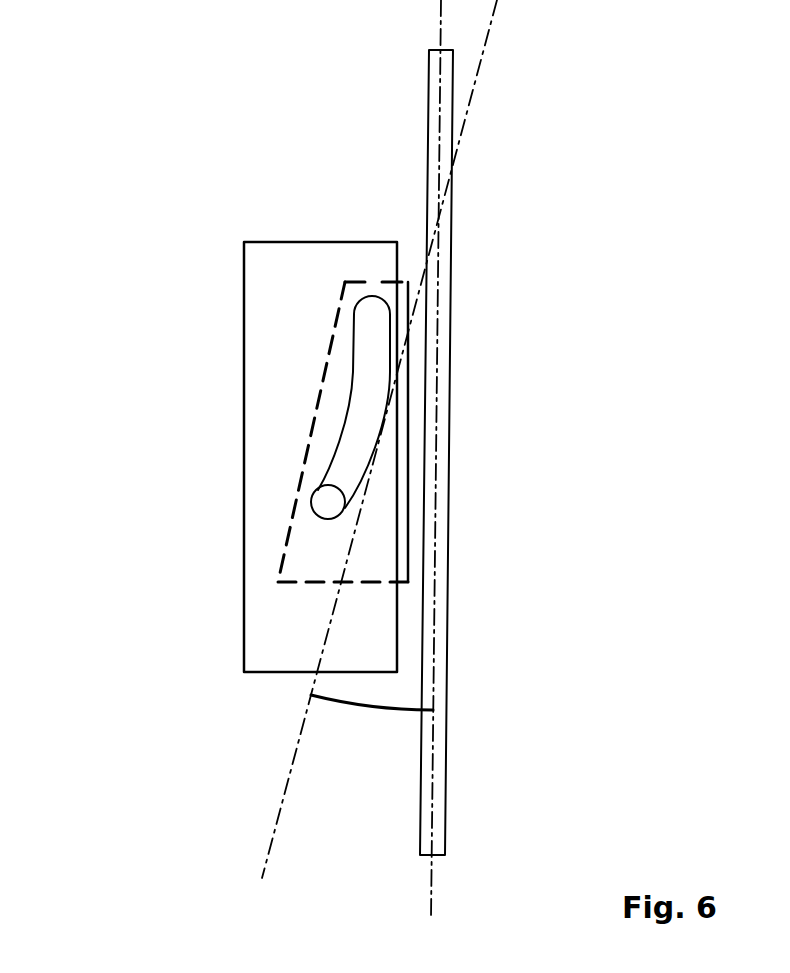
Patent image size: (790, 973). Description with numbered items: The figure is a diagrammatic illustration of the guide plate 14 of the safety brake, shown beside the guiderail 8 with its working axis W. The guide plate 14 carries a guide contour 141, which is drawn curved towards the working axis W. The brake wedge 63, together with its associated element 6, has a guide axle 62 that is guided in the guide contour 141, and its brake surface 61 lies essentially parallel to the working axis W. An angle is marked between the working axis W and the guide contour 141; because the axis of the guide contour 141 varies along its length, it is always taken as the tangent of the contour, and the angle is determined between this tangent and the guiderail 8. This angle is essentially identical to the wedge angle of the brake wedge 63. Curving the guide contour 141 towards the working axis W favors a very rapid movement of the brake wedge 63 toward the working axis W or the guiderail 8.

The guiderail 8 is at (517, 459).
The guide plate 14 is at (245, 285).
The guide contour 141 is at (345, 413).
The guide element 6 is at (463, 401).
The brake wedge 63 is at (372, 280).
The brake surface 61 is at (410, 445).
The guide axle 62 is at (340, 512).
The working axis W is at (430, 807).